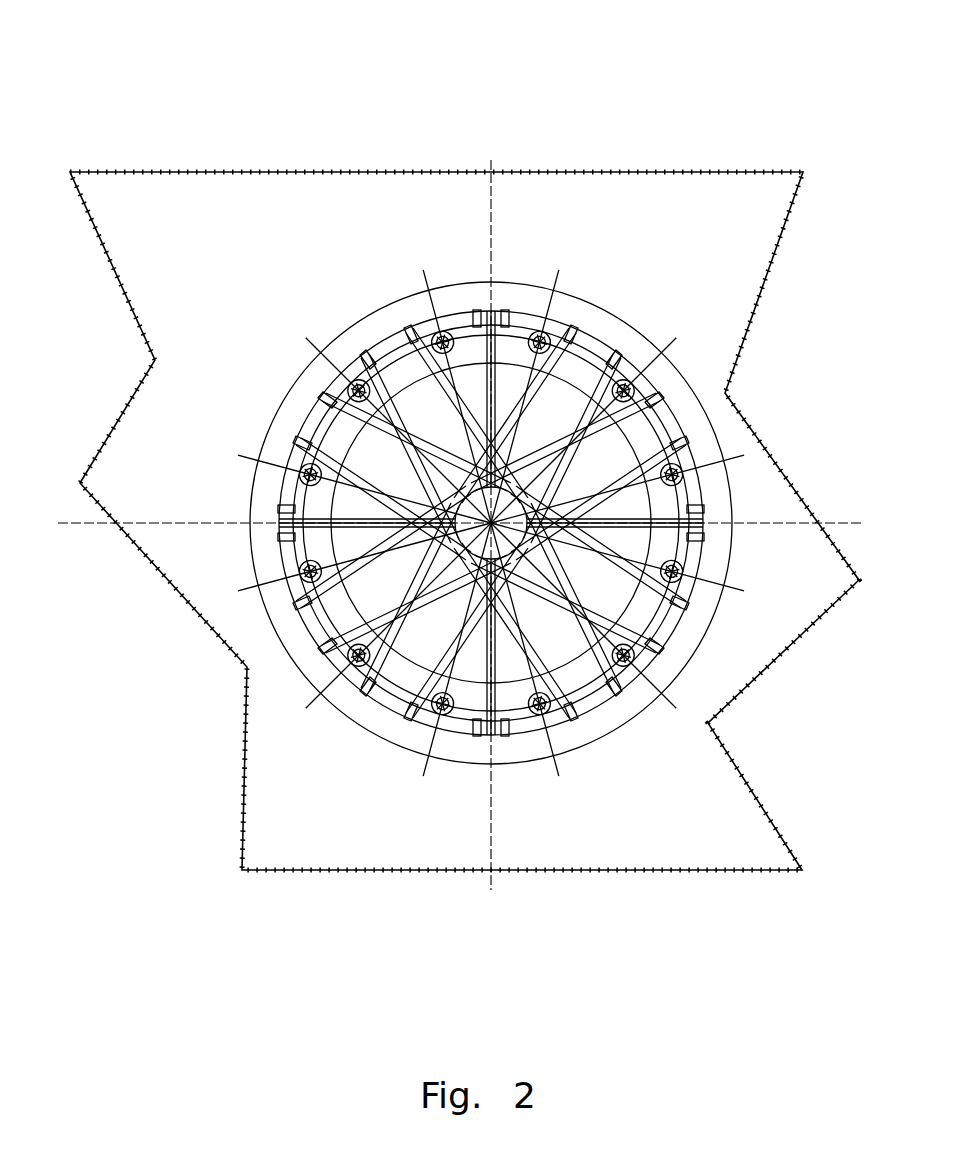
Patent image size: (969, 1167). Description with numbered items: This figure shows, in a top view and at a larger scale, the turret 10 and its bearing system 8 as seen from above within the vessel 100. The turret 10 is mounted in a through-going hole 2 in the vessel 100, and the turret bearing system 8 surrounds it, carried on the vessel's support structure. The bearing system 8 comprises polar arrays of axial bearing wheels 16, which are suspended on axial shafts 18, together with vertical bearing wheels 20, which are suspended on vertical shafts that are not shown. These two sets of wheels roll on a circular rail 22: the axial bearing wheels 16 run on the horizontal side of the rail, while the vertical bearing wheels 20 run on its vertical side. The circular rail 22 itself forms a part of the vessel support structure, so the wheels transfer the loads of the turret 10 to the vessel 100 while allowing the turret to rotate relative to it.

The turret 10 is at (606, 186).
The turret bearing system 8 is at (381, 268).
The vessel 100 is at (215, 266).
The through-going hole 2 is at (512, 322).
The vertical bearing wheels 20 is at (352, 382).
The axial bearing wheels 16 is at (303, 407).
The axial shafts 18 is at (340, 437).
The circular rail 22 is at (273, 483).